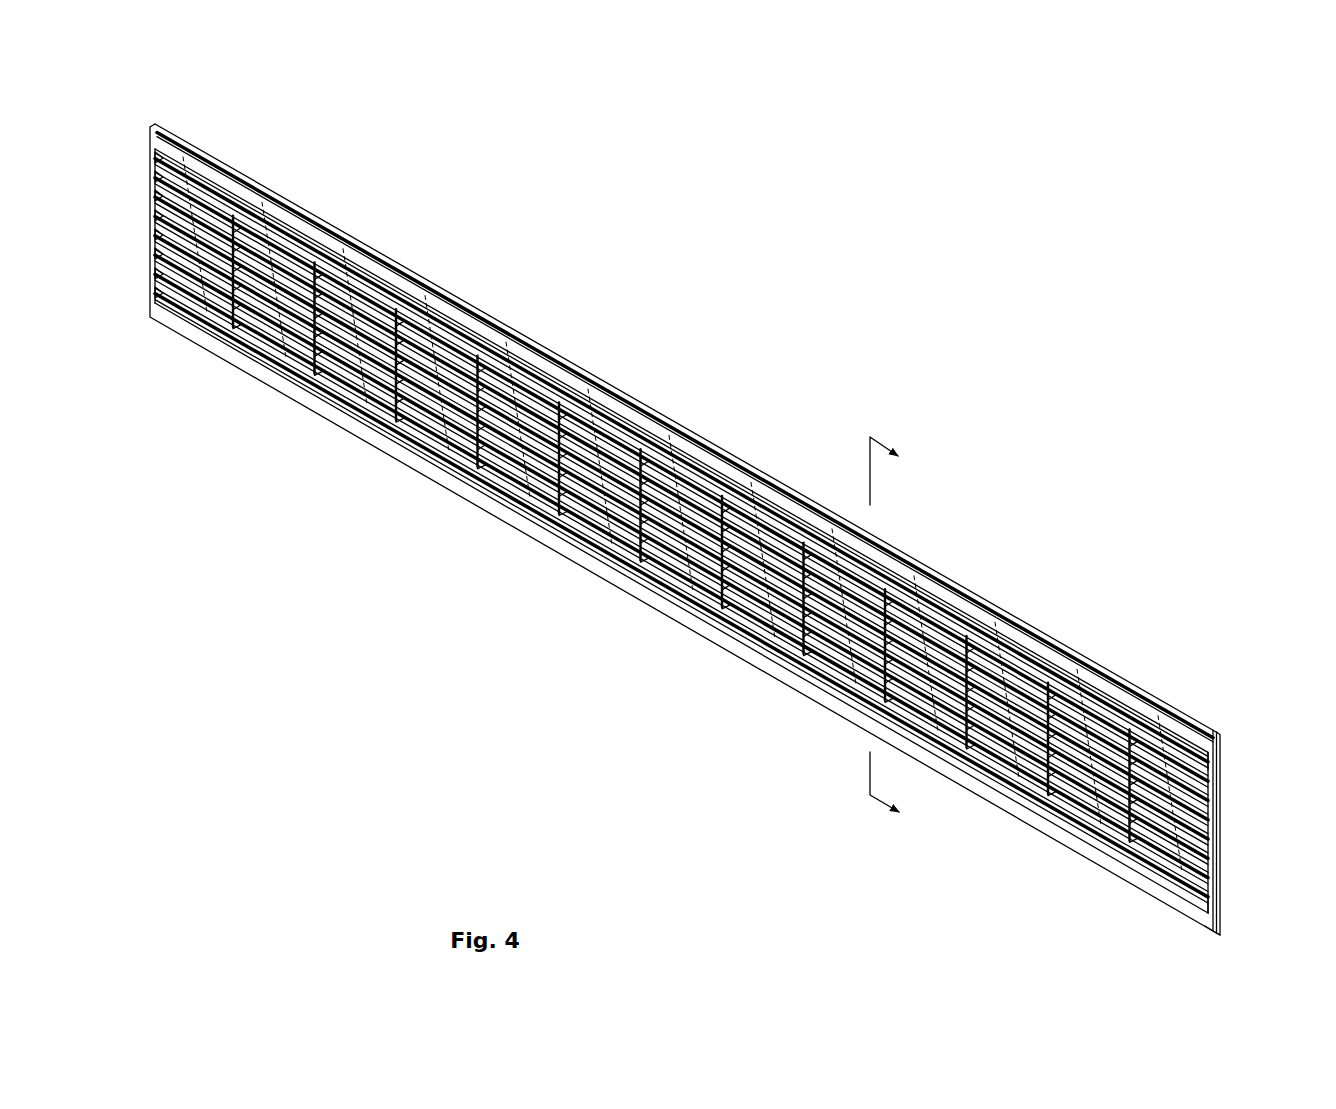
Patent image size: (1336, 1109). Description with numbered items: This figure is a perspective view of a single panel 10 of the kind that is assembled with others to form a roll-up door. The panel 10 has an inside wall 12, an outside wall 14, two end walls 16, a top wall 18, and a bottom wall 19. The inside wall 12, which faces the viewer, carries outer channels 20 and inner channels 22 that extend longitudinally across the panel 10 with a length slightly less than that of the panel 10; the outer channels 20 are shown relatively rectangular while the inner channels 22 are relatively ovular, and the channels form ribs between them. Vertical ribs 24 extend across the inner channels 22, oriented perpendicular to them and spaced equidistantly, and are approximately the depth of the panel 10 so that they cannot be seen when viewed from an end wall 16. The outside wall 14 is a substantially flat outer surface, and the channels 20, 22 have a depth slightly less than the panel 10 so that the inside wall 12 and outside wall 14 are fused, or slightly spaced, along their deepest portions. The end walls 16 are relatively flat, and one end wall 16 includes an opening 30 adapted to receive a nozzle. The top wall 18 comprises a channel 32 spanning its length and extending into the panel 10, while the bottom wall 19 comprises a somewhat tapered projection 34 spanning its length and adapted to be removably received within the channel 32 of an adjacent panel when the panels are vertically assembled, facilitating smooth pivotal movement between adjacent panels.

The panel 10 is at (1137, 585).
The inside wall 12 is at (758, 667).
The outside wall 14 is at (208, 150).
The end wall 16 is at (149, 152).
The top wall 18 is at (183, 133).
The bottom wall 19 is at (1222, 933).
The outer channel 20 is at (1196, 748).
The inner channel 22 is at (1203, 817).
The vertical rib 24 is at (233, 215).
The opening 30 is at (1220, 833).
The channel 32 is at (280, 197).
The projection 34 is at (1216, 935).